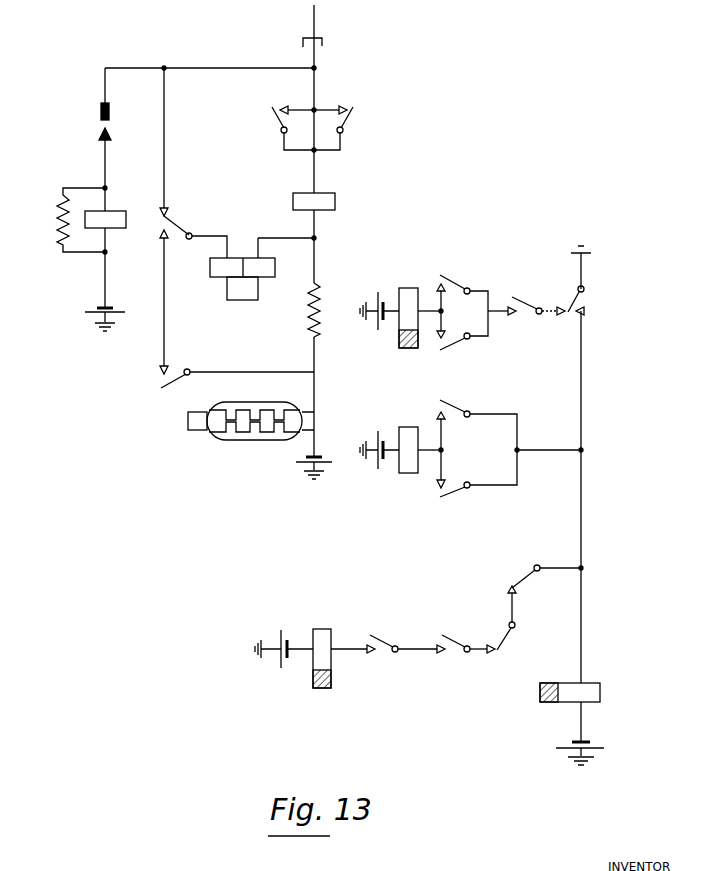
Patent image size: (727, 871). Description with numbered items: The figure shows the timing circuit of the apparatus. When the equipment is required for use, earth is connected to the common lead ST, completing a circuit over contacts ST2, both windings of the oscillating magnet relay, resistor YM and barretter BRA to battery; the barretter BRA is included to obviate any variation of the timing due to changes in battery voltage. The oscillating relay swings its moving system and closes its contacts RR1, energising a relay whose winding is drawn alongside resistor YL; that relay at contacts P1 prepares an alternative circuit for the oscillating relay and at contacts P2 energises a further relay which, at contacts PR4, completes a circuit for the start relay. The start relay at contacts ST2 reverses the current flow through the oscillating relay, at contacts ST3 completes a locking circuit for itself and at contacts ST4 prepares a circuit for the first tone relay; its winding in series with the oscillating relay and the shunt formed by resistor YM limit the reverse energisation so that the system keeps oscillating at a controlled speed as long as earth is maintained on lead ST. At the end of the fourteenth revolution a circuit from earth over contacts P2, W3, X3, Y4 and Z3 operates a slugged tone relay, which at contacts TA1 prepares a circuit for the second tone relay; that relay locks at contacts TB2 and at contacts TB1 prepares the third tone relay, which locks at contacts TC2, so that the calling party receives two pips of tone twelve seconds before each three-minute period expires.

The common lead ST is at (312, 21).
The contacts RR1 is at (121, 128).
The resistor YL is at (72, 220).
The contacts ST2 is at (185, 217).
The contacts ST3 is at (274, 128).
The contacts PR4 is at (349, 128).
The resistor YM is at (298, 310).
The contacts P1 is at (237, 382).
The barretter BRA is at (251, 412).
The contacts P2 is at (586, 300).
The contacts TA1 is at (462, 296).
The contacts TB2 is at (462, 334).
The contacts ST4 is at (526, 297).
The contacts TB1 is at (477, 439).
The contacts TC2 is at (509, 478).
The contacts Z3 is at (402, 642).
The contacts Y4 is at (466, 642).
The contacts X3 is at (514, 619).
The contacts W3 is at (539, 575).